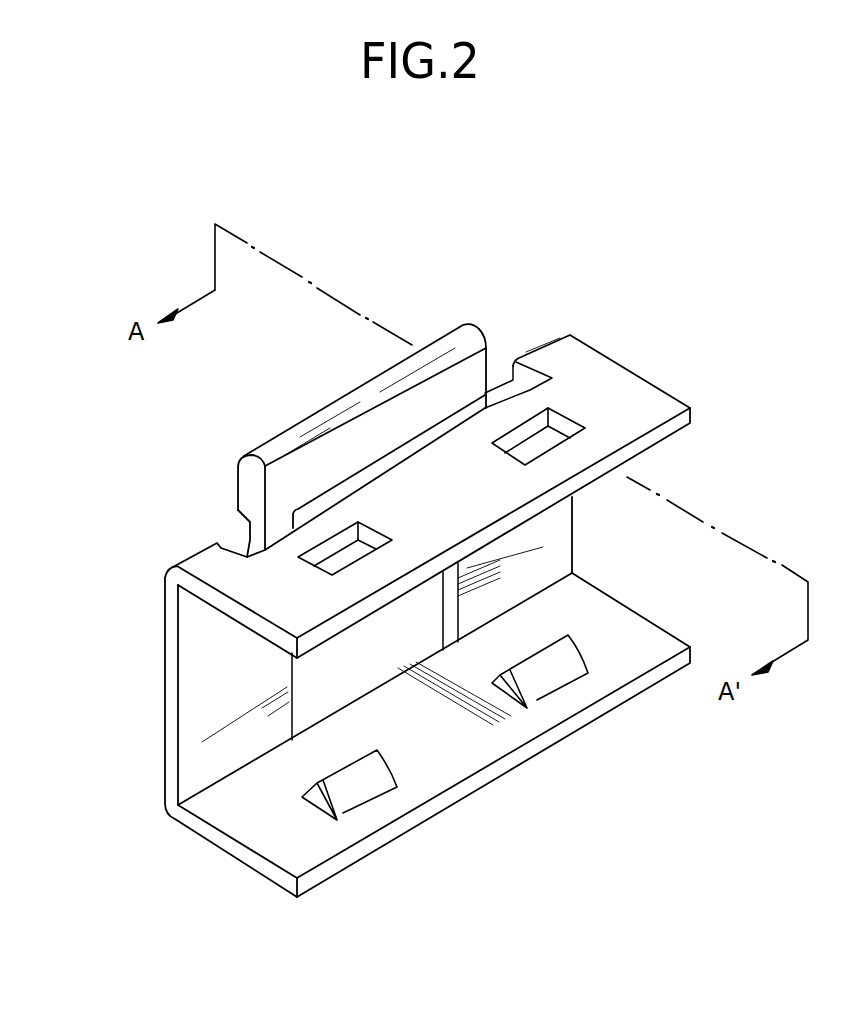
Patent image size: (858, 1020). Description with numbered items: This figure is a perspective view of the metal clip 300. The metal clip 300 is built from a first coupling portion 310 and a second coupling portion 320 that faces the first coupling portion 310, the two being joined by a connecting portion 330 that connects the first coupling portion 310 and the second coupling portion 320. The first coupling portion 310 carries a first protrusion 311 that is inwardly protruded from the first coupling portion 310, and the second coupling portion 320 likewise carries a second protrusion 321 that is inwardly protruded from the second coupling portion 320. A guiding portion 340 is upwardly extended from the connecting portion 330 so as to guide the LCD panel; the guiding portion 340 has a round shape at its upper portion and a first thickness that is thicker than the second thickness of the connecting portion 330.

The metal clip 300 is at (436, 155).
The first coupling portion 310 is at (507, 500).
The first protrusion 311 is at (358, 556).
The second coupling portion 320 is at (470, 750).
The second protrusion 321 is at (562, 664).
The connecting portion 330 is at (197, 693).
The guiding portion 340 is at (295, 447).